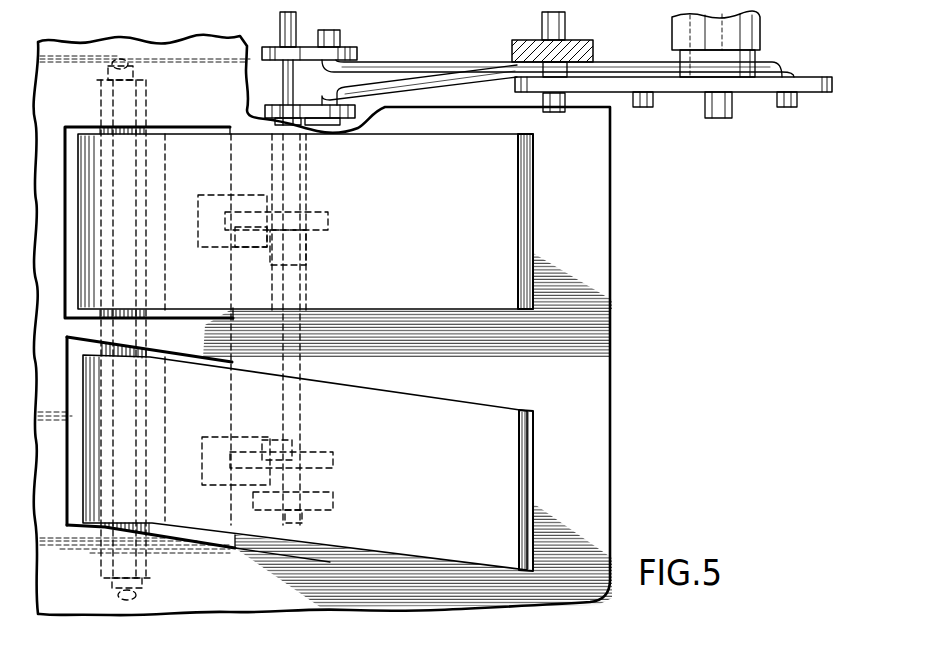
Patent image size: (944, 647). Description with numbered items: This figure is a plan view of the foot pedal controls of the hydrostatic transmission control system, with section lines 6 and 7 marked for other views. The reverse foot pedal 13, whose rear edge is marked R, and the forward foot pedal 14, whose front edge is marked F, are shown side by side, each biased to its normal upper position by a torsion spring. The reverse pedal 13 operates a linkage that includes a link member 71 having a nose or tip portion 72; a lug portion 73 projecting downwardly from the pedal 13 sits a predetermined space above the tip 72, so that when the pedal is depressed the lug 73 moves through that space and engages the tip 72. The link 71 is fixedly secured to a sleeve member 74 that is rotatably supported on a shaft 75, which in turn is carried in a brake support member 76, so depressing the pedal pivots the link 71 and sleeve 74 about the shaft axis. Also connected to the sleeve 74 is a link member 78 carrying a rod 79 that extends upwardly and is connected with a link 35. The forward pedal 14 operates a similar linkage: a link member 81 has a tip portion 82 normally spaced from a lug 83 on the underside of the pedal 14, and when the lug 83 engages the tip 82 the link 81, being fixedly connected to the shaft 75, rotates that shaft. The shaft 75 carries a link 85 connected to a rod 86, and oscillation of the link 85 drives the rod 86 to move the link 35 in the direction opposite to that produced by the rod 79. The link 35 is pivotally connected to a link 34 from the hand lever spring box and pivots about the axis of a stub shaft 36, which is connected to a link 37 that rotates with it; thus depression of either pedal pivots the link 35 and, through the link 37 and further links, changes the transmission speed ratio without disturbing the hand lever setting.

The reverse foot pedal 13 is at (528, 223).
The rear edge of upper plate R is at (523, 272).
The forward foot pedal 14 is at (532, 486).
The front edge of lower plate F is at (522, 437).
The link member 71 is at (334, 220).
The tip portion 72 is at (235, 250).
The lug portion 73 is at (270, 190).
The sleeve member 74 is at (310, 183).
The shaft 75 is at (302, 347).
The brake support member 76 is at (335, 502).
The link member 81 is at (330, 458).
The tip portion 82 is at (276, 432).
The lug 83 is at (290, 440).
The link member 78 is at (281, 105).
The link 85 is at (282, 47).
The rod 86 is at (418, 63).
The rod 79 is at (471, 85).
The link 34 is at (597, 45).
The link 35 is at (683, 93).
The stub shaft 36 is at (720, 116).
The link 37 is at (762, 30).
The section line 6- 6 is at (547, 197).
The section line 7- 7 is at (250, 625).